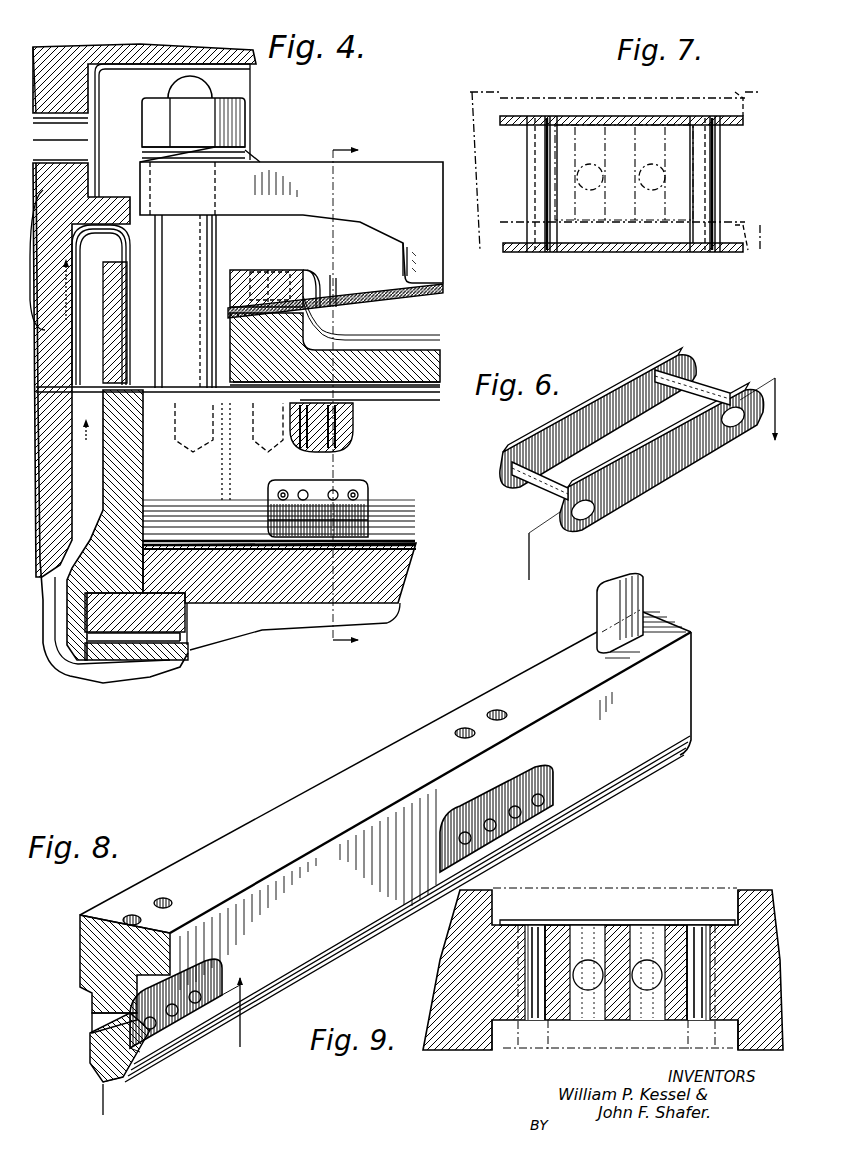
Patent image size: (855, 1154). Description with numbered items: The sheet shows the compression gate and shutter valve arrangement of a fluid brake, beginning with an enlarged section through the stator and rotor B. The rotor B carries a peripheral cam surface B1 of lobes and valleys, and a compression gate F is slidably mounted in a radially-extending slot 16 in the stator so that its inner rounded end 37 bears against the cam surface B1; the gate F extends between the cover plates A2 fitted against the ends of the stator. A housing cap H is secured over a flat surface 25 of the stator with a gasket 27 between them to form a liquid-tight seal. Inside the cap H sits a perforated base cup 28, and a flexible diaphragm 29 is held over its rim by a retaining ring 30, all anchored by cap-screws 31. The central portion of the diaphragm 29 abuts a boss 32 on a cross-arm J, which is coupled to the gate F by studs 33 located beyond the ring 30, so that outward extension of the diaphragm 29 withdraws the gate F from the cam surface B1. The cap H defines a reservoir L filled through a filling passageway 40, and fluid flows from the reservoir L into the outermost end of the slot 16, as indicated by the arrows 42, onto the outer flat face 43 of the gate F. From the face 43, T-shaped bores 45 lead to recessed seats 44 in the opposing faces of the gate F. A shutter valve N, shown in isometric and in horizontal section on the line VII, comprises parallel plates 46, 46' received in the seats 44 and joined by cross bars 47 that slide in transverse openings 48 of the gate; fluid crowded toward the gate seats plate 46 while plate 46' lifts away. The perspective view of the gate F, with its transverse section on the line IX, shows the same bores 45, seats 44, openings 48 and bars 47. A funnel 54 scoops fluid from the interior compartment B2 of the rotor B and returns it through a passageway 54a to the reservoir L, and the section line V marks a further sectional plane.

In FIG. 4, the radially-extending slots 16 is at (150, 395).
In FIG. 4, the flat surfaces 25 is at (125, 380).
In FIG. 4, the gaskets 27 is at (118, 345).
In FIG. 4, the perforated base cups 28 is at (440, 358).
In FIG. 4, the flexible diaphragms 29 is at (443, 296).
In FIG. 4, the retaining rings 30 is at (306, 268).
In FIG. 4, the cap-screws 31 is at (238, 453).
In FIG. 4, the bosses 32 is at (402, 254).
In FIG. 4, the studs 33 is at (170, 283).
In FIG. 8, the studs 33 is at (596, 610).
In FIG. 4, the inner rounded ends 37 is at (405, 529).
In FIG. 8, the inner rounded ends 37 is at (98, 1078).
In FIG. 4, the filling passageways 40 is at (78, 152).
In FIG. 4, the arrows 42 is at (248, 258).
In FIG. 4, the outermost flat faces 43 is at (425, 404).
In FIG. 8, the outermost flat faces 43 is at (262, 833).
In FIG. 4, the recessed seats 44 is at (345, 514).
In FIG. 7, the recessed seats 44 is at (735, 95).
In FIG. 8, the recessed seats 44 is at (92, 1003).
In FIG. 9, the recessed seats 44 is at (678, 900).
In FIG. 4, the T-shaped bores 45 is at (300, 455).
In FIG. 7, the T-shaped bores 45 is at (655, 215).
In FIG. 8, the T-shaped bores 45 is at (160, 898).
In FIG. 9, the T-shaped bores 45 is at (650, 935).
In FIG. 7, the plate 46 is at (621, 93).
In FIG. 6, the plate 46 is at (598, 404).
In FIG. 9, the plate 46 is at (728, 893).
In FIG. 4, the plate 46' is at (337, 501).
In FIG. 7, the plate 46' is at (623, 259).
In FIG. 6, the plate 46' is at (662, 457).
In FIG. 9, the plate 46' is at (631, 1051).
In FIG. 4, the cross bars 47 is at (358, 490).
In FIG. 7, the cross bars 47 is at (527, 172).
In FIG. 6, the cross bars 47 is at (540, 502).
In FIG. 9, the cross bars 47 is at (543, 1032).
In FIG. 7, the transverse openings 48 is at (720, 150).
In FIG. 8, the transverse openings 48 is at (95, 1026).
In FIG. 9, the transverse openings 48 is at (525, 947).
In FIG. 4, the funnel 54 is at (148, 680).
In FIG. 4, the passageway 54a is at (100, 469).
In FIG. 4, the housing caps H is at (132, 46).
In FIG. 4, the cross-arms J is at (408, 170).
In FIG. 4, the reservoirs L is at (232, 270).
In FIG. 4, the shutter valves N is at (266, 495).
In FIG. 7, the shutter valves N is at (575, 112).
In FIG. 6, the shutter valves N is at (631, 426).
In FIG. 9, the shutter valves N is at (556, 915).
In FIG. 4, the compression gates F is at (410, 472).
In FIG. 7, the compression gates F is at (485, 95).
In FIG. 8, the compression gates F is at (385, 847).
In FIG. 9, the compression gates F is at (438, 982).
In FIG. 4, the section line V is at (342, 147).
In FIG. 6, the section line VII— VII is at (649, 495).
In FIG. 8, the section line IX— IX is at (118, 1127).
In FIG. 4, the cover plates A2 is at (135, 498).
In FIG. 4, the rotor B is at (408, 575).
In FIG. 4, the cam surface B1 is at (408, 549).
In FIG. 4, the interior compartment B2 is at (222, 628).